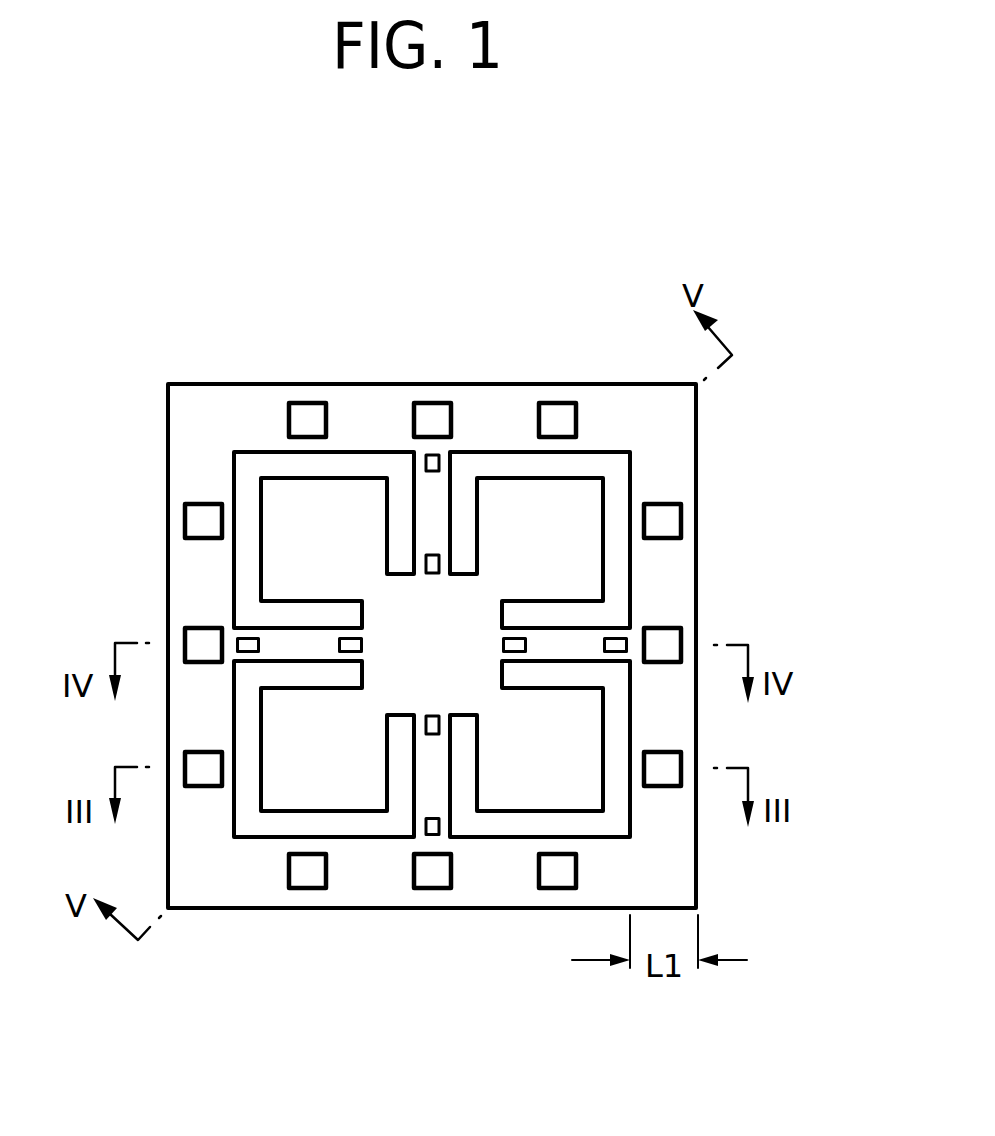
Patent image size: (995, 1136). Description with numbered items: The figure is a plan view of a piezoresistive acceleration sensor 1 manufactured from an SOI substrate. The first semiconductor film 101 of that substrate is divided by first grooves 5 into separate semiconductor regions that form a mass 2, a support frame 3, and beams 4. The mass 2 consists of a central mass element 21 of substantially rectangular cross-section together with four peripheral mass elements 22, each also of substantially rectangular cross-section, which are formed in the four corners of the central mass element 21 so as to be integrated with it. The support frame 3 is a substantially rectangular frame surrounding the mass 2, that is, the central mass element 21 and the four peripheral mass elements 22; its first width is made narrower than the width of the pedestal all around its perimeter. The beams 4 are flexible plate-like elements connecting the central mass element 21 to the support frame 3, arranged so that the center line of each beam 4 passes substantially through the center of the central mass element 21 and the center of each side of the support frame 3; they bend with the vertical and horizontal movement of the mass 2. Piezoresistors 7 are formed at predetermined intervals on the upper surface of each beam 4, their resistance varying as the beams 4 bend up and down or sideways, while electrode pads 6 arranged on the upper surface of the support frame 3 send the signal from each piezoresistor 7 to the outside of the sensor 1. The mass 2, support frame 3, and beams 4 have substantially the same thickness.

The piezoresistive acceleration sensor 1 is at (528, 262).
The mass 2 is at (107, 395).
The support frame 3 is at (690, 470).
The beams 4 is at (573, 640).
The first grooves 5 is at (351, 465).
The electrode pads 6 is at (433, 400).
The piezoresistors 7 is at (441, 460).
The central mass element 21 is at (413, 643).
The peripheral mass elements 22 is at (298, 523).
The first semiconductor film 101 is at (273, 284).